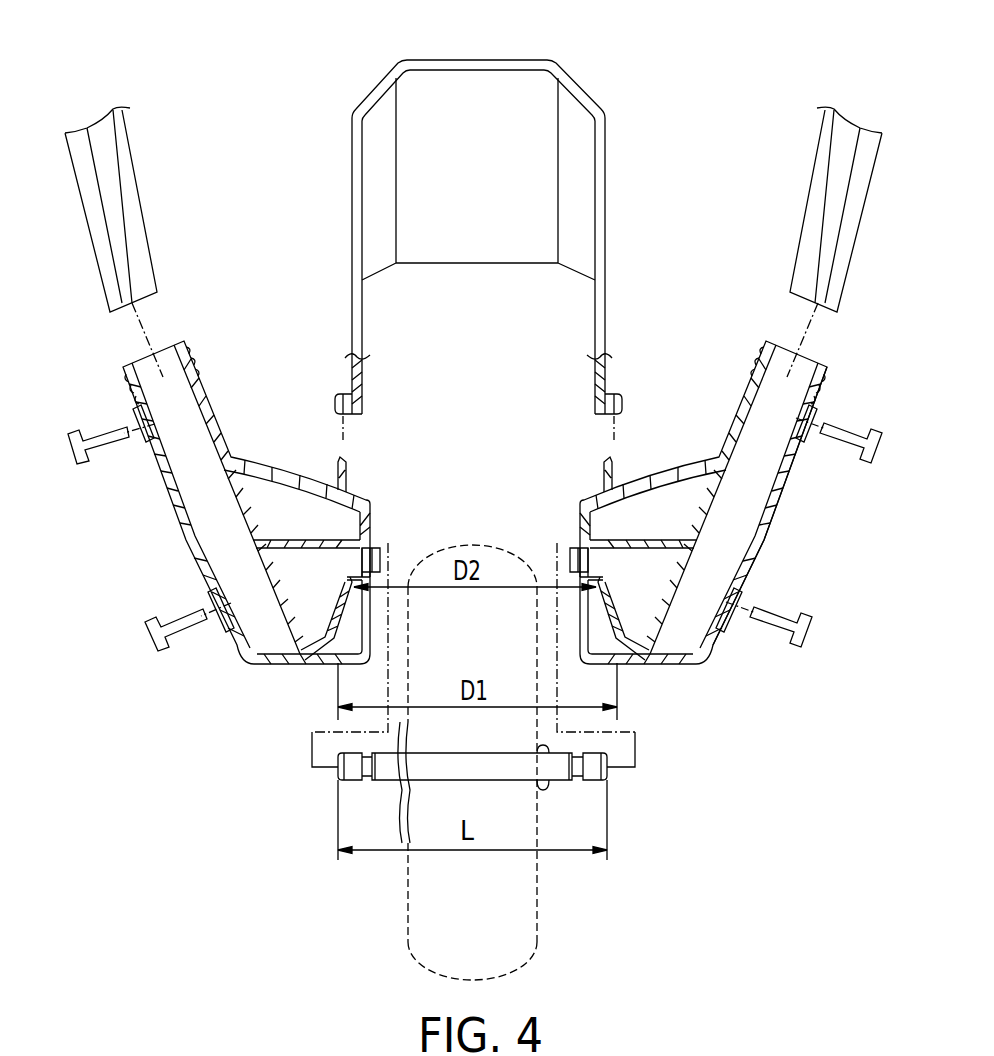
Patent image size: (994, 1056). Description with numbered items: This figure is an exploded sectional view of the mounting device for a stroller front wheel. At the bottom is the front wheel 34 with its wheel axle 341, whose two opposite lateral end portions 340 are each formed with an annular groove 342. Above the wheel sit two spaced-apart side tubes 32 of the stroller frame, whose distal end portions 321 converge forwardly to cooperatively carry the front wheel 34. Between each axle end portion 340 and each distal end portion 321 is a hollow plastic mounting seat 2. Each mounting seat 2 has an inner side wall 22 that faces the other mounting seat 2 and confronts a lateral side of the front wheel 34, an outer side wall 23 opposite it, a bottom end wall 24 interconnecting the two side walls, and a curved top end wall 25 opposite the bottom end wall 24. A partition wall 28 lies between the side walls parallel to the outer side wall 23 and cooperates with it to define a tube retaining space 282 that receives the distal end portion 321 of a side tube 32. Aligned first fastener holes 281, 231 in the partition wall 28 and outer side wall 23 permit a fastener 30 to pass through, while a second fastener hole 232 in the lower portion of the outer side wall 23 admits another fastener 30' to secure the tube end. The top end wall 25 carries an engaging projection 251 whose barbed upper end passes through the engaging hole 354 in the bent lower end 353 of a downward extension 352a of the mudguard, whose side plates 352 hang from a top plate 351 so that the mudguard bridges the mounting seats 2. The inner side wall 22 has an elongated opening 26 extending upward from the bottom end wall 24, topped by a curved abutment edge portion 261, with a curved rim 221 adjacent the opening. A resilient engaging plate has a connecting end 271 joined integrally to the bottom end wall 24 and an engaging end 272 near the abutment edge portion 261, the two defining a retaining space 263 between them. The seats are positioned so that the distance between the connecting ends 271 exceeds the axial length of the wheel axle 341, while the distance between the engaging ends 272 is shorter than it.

The top plate 351 is at (468, 60).
The side plate 352 is at (607, 208).
The downward extension 352a is at (362, 325).
The bent lower end 353 is at (366, 402).
The engaging hole 354 is at (345, 417).
The side tube 32 is at (152, 208).
The distal end portion 321 is at (855, 220).
The mounting seat 2 is at (837, 353).
The first fastener hole 281 is at (752, 393).
The partition wall 28 is at (713, 468).
The top end wall 25 is at (667, 477).
The inner side wall 22 is at (580, 545).
The curved rim 221 is at (583, 552).
The engaging projection 251 is at (610, 478).
The first fastener hole 231 is at (818, 415).
The tube retaining space 282 is at (768, 458).
The outer side wall 23 is at (778, 500).
The fastener 30 is at (488, 466).
The abutment edge portion 261 is at (593, 556).
The second fastener hole 232 is at (733, 600).
The fastener 30' is at (513, 648).
The engaging end 272 is at (603, 585).
The connecting end 271 is at (627, 653).
The bottom end wall 24 is at (688, 657).
The elongated opening 26 is at (597, 628).
The retaining space 263 is at (353, 570).
The end portion 340 is at (610, 768).
The annular groove 342 is at (553, 787).
The wheel axle 341 is at (577, 772).
The front wheel 34 is at (495, 938).